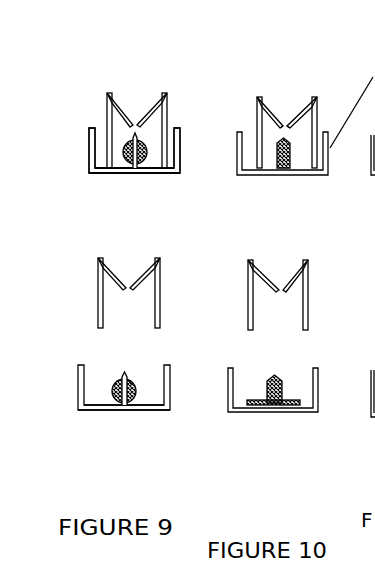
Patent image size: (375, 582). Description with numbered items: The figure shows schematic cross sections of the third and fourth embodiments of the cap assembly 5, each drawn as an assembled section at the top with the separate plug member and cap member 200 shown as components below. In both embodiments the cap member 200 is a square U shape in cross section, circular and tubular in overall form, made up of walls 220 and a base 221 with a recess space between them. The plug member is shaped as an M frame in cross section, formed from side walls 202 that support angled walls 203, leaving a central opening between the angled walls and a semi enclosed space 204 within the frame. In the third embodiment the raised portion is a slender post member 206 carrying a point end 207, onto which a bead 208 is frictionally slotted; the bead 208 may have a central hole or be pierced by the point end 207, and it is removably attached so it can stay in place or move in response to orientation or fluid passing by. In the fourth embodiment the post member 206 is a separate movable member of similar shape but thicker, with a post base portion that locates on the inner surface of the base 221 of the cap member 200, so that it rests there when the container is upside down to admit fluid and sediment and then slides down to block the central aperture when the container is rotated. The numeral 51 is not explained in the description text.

In FIG. 9, the cap assembly 5 is at (82, 100).
In FIG. 10, the adjacent assembly 51 is at (373, 340).
In FIG. 9, the cap member 200 is at (370, 188).
In FIG. 9, the side walls 202 is at (320, 118).
In FIG. 10, the side walls 202 is at (98, 290).
In FIG. 9, the angled walls 203 is at (298, 113).
In FIG. 9, the semi enclosed space 204 is at (270, 137).
In FIG. 10, the post member 206 is at (118, 398).
In FIG. 10, the point end 207 is at (126, 378).
In FIG. 10, the bead 208 is at (133, 382).
In FIG. 9, the walls 220 is at (88, 152).
In FIG. 10, the walls 220 is at (170, 393).
In FIG. 9, the base 221 is at (153, 175).
In FIG. 10, the base 221 is at (147, 412).